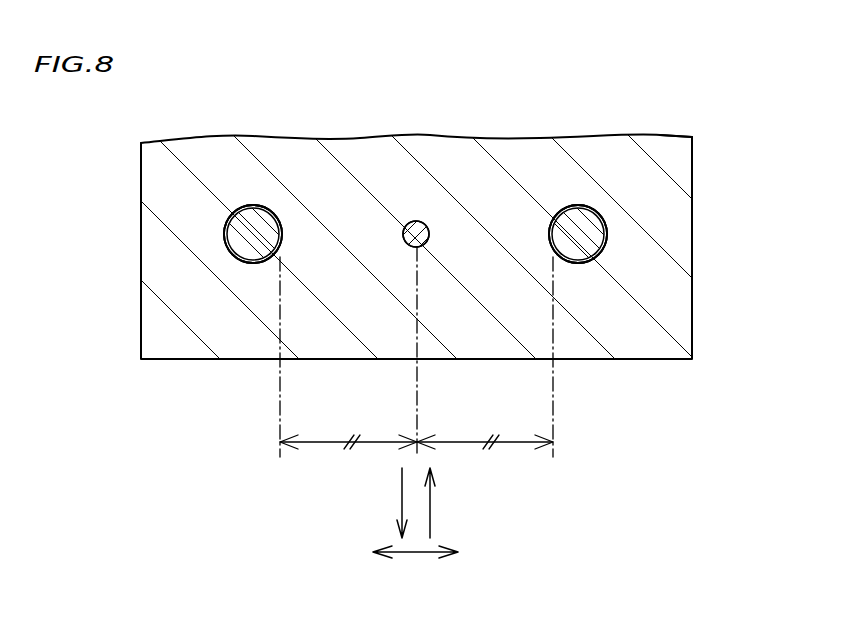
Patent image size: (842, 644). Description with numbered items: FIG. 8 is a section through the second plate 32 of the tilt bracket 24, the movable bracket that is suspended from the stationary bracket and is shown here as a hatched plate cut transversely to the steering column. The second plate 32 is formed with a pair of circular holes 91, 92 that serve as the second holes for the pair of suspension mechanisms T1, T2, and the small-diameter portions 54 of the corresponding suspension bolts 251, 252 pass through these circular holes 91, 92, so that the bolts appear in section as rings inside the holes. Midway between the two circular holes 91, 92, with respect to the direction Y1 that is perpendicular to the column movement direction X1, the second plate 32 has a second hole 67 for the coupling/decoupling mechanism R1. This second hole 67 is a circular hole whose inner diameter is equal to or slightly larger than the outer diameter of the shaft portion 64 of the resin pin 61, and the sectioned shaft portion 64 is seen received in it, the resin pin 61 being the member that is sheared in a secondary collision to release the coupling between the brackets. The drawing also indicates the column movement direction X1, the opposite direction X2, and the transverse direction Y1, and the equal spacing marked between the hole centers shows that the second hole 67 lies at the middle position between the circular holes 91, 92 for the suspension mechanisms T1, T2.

The tilt bracket 24 is at (696, 220).
The second plate 32 is at (680, 158).
The circular hole 91 is at (226, 228).
The circular hole 92 is at (604, 236).
The suspension bolt 251 is at (257, 205).
The suspension bolt 252 is at (583, 205).
The small-diameter portion 54 is at (267, 230).
The shaft portion 64 is at (415, 221).
The resin pin 61 is at (426, 222).
The second hole 67 is at (409, 246).
The suspension mechanism T1 is at (237, 203).
The suspension mechanism T2 is at (558, 206).
The coupling/decoupling mechanism R1 is at (404, 222).
The column movement direction X1 is at (430, 510).
The direction X2 is at (402, 492).
The direction perpendicular to the column movement direction Y1 is at (417, 555).